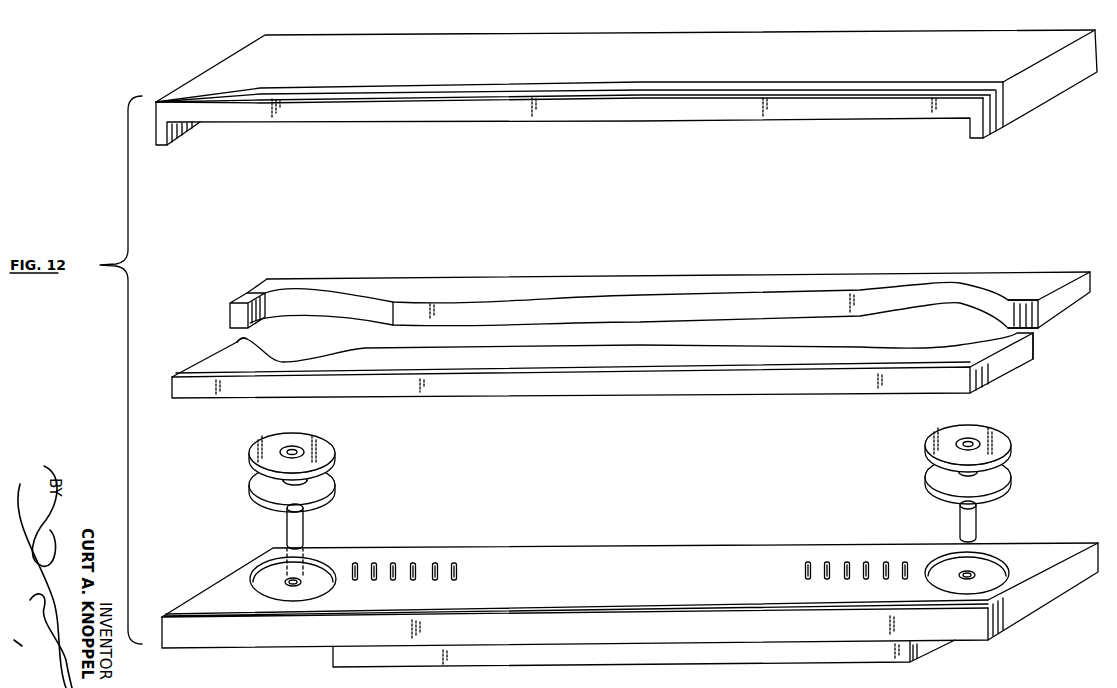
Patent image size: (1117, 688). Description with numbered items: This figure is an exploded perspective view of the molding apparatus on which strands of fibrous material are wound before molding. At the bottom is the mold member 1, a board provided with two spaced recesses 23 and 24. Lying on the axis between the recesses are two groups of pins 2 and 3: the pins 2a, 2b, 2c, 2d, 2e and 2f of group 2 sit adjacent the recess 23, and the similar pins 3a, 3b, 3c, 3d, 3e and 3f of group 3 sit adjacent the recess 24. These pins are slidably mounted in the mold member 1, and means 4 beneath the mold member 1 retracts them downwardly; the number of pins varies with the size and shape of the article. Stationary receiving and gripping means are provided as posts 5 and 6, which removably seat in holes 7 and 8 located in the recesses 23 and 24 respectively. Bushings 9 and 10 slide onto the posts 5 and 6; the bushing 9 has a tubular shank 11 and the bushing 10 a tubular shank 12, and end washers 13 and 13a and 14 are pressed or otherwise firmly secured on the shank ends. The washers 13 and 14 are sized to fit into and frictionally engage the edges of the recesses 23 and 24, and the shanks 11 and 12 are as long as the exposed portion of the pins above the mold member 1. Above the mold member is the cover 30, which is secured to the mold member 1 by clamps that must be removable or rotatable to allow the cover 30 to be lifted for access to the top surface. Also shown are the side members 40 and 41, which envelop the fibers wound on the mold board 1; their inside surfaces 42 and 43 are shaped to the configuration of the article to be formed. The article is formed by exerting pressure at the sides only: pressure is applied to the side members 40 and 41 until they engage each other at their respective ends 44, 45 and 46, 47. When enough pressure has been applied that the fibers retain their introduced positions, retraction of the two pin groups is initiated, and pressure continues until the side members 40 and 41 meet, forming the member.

The mold member 1 is at (630, 569).
The pin group 2 is at (451, 557).
The pin 2a is at (357, 561).
The pin 2b is at (376, 561).
The pin 2c is at (395, 578).
The pin 2d is at (416, 561).
The pin 2e is at (437, 578).
The pin 2f is at (457, 558).
The pin group 3 is at (835, 550).
The pin 3a is at (897, 548).
The pin 3b is at (884, 569).
The pin 3c is at (863, 560).
The pin 3d is at (847, 573).
The pin 3e is at (822, 560).
The pin 3f is at (805, 571).
The pin retracting means 4 is at (333, 660).
The post 5 is at (304, 525).
The post 6 is at (975, 518).
The hole 7 is at (290, 583).
The hole 8 is at (963, 577).
The bushing 9 is at (301, 466).
The bushing 10 is at (916, 461).
The tubular shank 11 is at (262, 486).
The tubular shank 12 is at (960, 474).
The end washer 13 is at (333, 482).
The end washer 13a is at (335, 463).
The end washer 14 is at (943, 482).
The recess 23 is at (260, 577).
The recess 24 is at (1000, 575).
The cover 30 is at (468, 120).
The side member 40 is at (631, 335).
The side member 41 is at (639, 291).
The inside surface 42 is at (283, 361).
The inside surface 43 is at (368, 313).
The end 44 is at (238, 341).
The end 45 is at (1034, 333).
The end 46 is at (1030, 318).
The end 47 is at (232, 318).